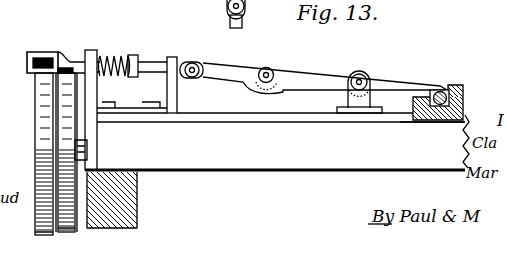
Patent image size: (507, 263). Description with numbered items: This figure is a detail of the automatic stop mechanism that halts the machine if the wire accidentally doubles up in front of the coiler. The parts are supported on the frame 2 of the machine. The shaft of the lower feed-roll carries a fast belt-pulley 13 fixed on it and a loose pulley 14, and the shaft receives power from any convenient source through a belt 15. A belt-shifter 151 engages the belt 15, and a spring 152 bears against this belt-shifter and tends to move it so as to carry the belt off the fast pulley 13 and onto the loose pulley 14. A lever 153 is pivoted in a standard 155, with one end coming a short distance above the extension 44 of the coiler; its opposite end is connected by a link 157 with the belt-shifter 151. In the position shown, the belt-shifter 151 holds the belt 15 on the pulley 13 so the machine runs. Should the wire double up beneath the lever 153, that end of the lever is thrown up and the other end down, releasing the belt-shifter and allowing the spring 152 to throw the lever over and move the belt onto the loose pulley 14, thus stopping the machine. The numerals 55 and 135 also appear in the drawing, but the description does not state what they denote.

The frame 2 is at (243, 165).
The belt-pulley 13 is at (38, 93).
The loose pulley 14 is at (68, 230).
The belt 15 is at (47, 57).
The extension of the coiler 44 is at (456, 88).
The base plate 55 is at (425, 121).
The roller 135 is at (246, 5).
The belt-shifter 151 is at (72, 62).
The spring 152 is at (118, 57).
The lever 153 is at (303, 78).
The standard 155 is at (361, 74).
The link 157 is at (215, 68).